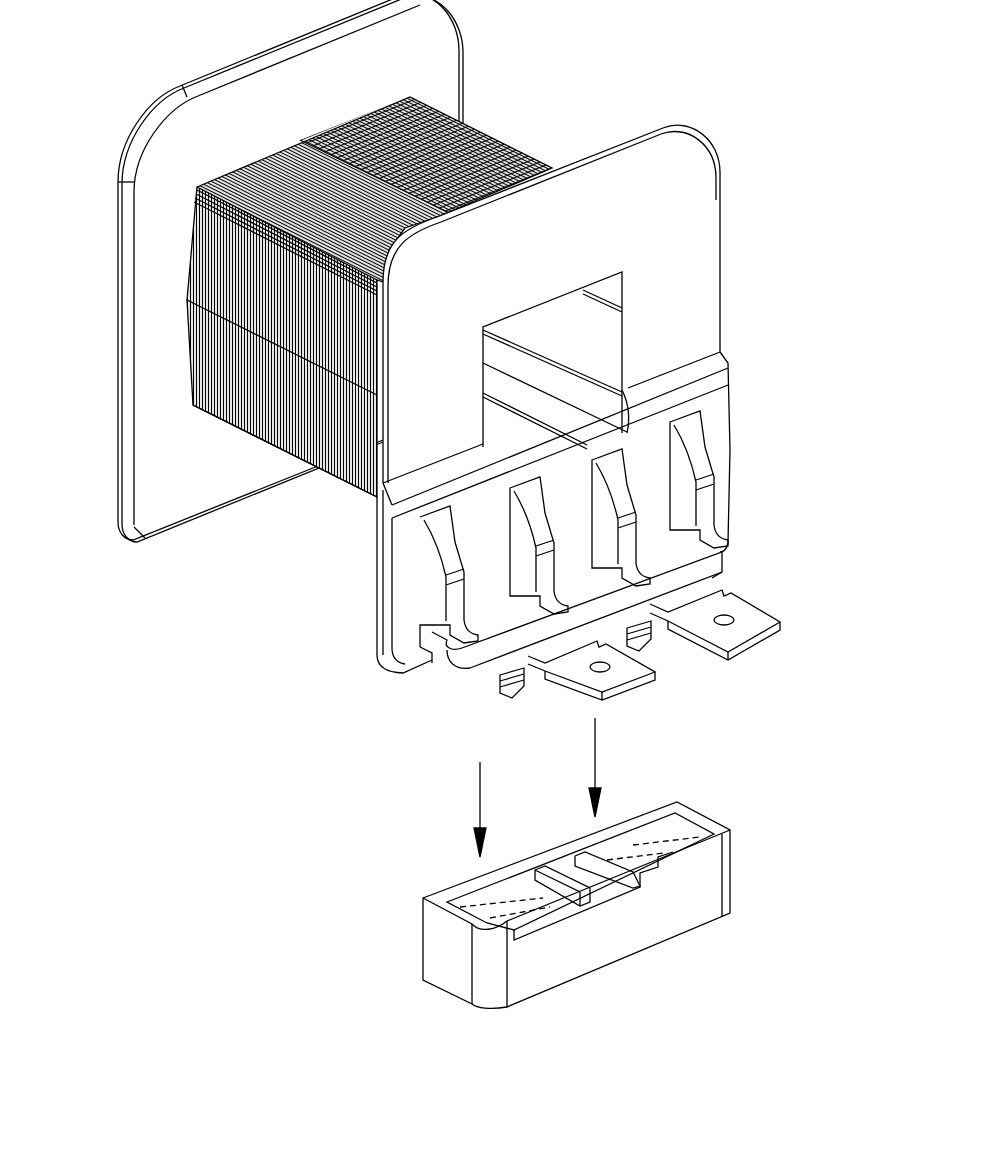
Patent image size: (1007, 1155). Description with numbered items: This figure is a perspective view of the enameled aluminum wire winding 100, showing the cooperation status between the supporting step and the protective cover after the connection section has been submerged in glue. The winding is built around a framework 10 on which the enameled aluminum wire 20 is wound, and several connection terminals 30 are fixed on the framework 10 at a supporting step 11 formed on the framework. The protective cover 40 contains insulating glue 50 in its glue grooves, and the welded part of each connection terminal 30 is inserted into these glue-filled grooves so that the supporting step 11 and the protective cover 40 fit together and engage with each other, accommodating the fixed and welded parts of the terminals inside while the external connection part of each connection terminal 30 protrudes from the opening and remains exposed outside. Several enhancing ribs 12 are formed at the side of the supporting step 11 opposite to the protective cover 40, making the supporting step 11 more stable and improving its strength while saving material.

The enameled aluminum wire winding 100 is at (50, 23).
The framework 10 is at (668, 208).
The supporting step 11 is at (463, 668).
The enhancing ribs 12 is at (688, 455).
The enameled aluminum wire 20 is at (527, 143).
The connection terminal 30 is at (757, 620).
The protective cover 40 is at (702, 893).
The insulating glue 50 is at (475, 903).